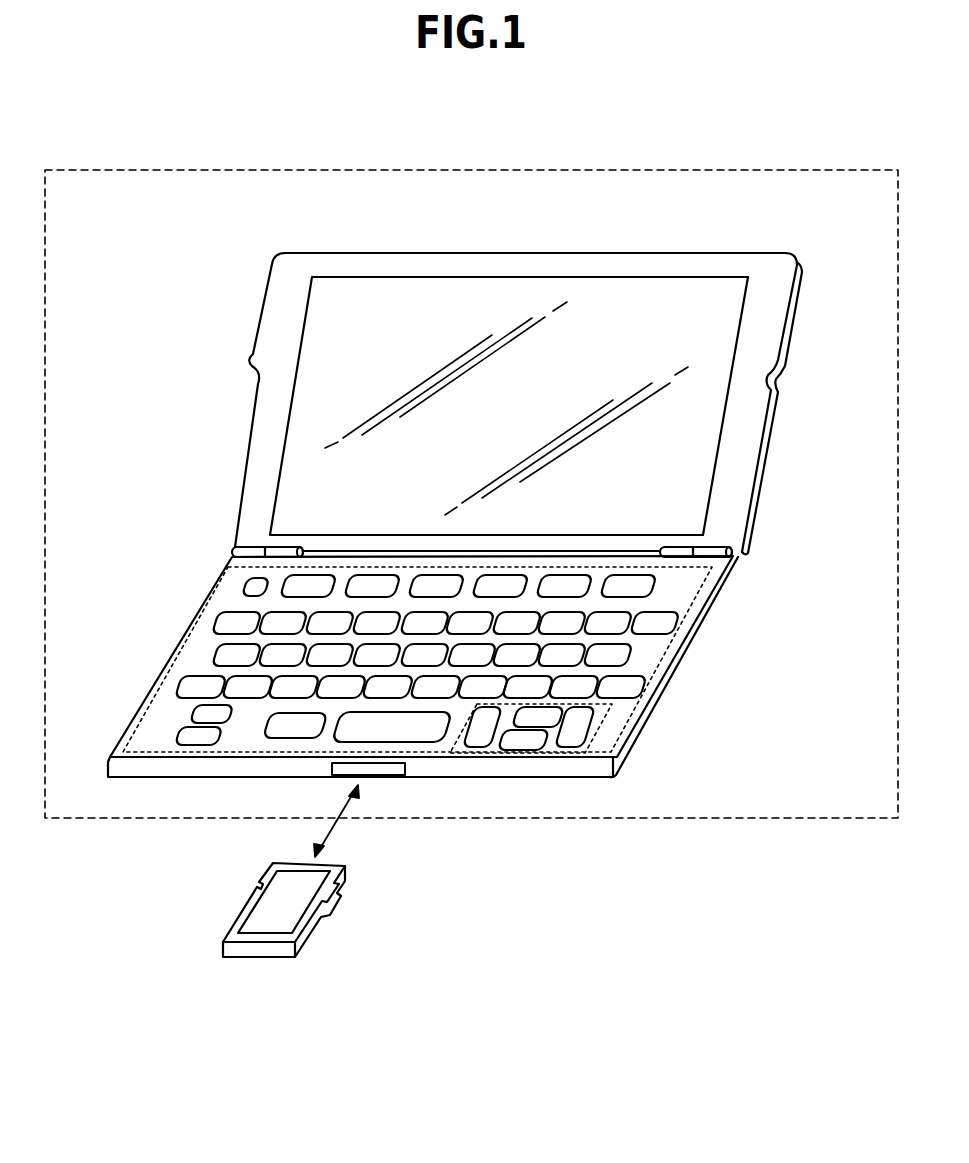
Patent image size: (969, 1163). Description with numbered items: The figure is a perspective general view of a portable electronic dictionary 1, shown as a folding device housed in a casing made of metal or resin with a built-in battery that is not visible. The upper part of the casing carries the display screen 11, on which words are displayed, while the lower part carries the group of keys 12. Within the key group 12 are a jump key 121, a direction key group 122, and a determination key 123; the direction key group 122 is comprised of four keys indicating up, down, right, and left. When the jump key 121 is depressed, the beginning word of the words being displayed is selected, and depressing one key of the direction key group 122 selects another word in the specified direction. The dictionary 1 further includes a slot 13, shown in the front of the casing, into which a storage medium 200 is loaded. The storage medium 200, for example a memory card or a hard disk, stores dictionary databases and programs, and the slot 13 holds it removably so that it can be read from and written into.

The portable electronic dictionary 1 is at (843, 170).
The display screen 11 is at (620, 277).
The group of keys 12 is at (690, 643).
The jump key 121 is at (283, 742).
The direction key group 122 is at (615, 720).
The determination key 123 is at (358, 742).
The slot 13 is at (397, 770).
The storage medium 200 is at (320, 920).